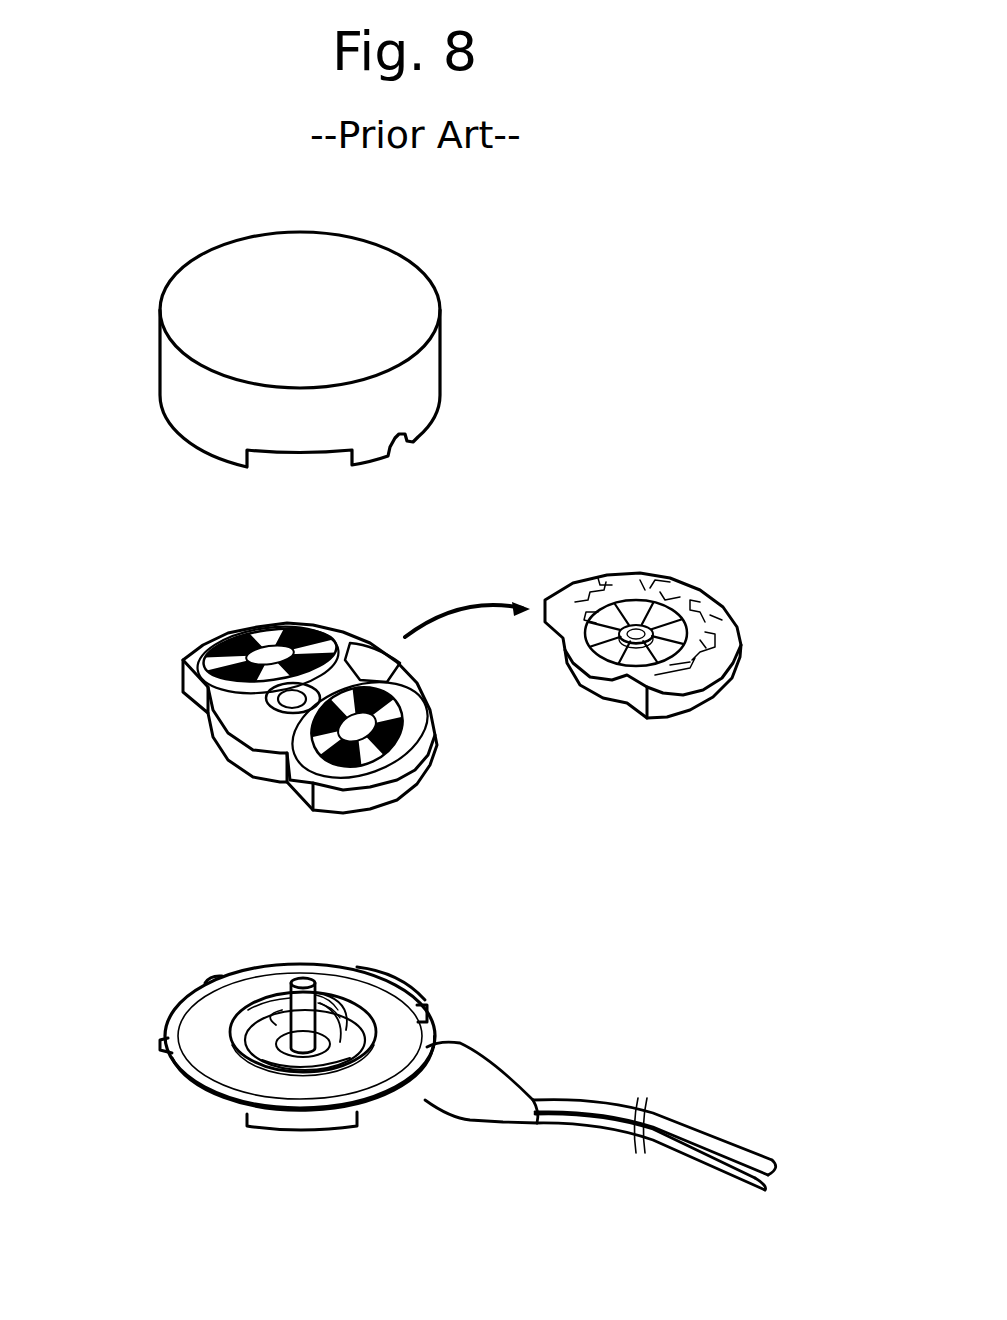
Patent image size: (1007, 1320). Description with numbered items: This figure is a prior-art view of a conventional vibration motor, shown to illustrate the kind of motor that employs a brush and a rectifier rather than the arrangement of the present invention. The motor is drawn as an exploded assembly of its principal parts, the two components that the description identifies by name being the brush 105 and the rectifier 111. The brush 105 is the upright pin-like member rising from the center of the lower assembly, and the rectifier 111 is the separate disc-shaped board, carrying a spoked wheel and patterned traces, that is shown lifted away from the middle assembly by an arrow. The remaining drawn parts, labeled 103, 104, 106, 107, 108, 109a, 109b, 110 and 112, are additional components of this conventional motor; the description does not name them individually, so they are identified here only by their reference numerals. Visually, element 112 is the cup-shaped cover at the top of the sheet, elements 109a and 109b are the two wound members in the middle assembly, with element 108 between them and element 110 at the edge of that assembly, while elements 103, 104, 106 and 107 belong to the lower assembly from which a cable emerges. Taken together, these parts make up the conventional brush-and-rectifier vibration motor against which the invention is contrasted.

The base plate 103 is at (262, 1010).
The locking tab 104 is at (336, 1116).
The brush 105 is at (318, 1002).
The rotor / bearing seat 106 is at (250, 1046).
The base housing with cable 107 is at (400, 1022).
The bearing 108 is at (285, 700).
The coil 109a is at (390, 722).
The coil 109b is at (220, 660).
The opening 110 is at (413, 663).
The rectifier 111 is at (650, 622).
The cover 112 is at (190, 292).